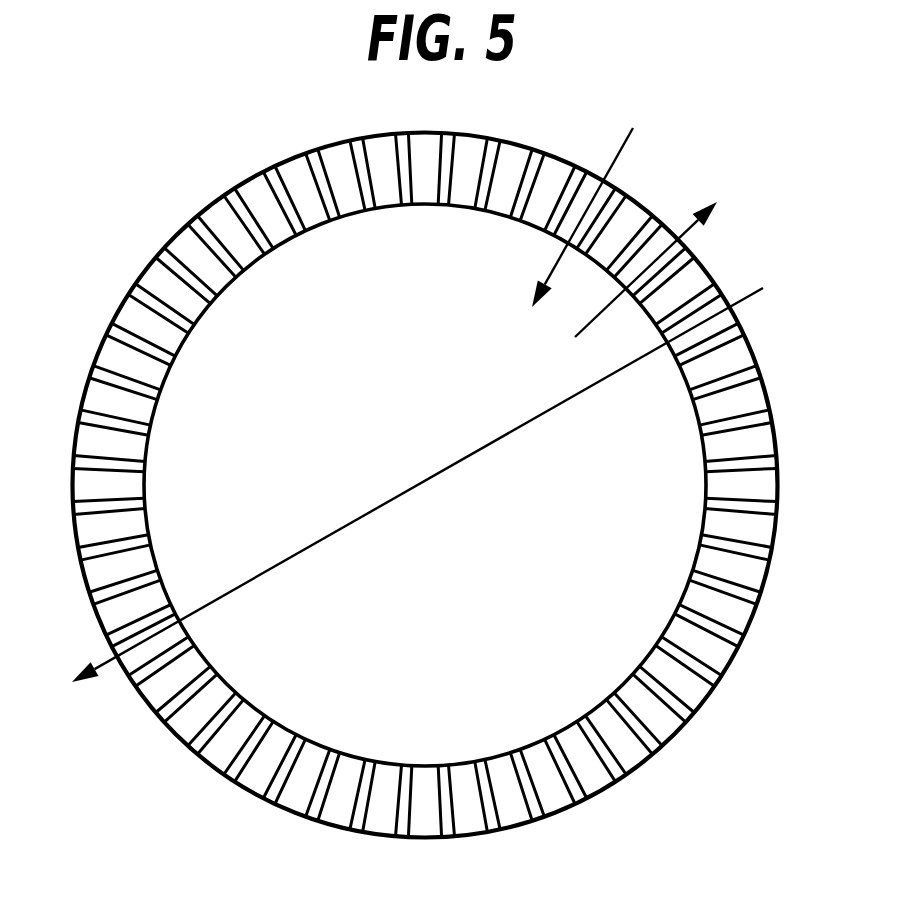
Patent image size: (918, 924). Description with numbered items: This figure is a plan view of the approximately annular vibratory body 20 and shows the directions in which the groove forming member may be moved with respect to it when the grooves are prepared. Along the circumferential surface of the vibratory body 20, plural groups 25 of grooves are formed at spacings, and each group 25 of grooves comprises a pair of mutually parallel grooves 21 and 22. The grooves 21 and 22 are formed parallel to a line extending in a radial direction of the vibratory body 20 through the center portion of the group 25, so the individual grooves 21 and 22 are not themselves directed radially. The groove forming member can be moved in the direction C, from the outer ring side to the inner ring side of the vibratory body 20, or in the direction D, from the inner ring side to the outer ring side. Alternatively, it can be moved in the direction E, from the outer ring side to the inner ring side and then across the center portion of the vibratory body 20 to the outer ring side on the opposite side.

The vibratory body 20 is at (408, 485).
The groove 21 is at (402, 208).
The groove 22 is at (448, 208).
The group of grooves 25 is at (396, 266).
The direction C is at (602, 205).
The direction D is at (663, 258).
The direction E is at (435, 476).